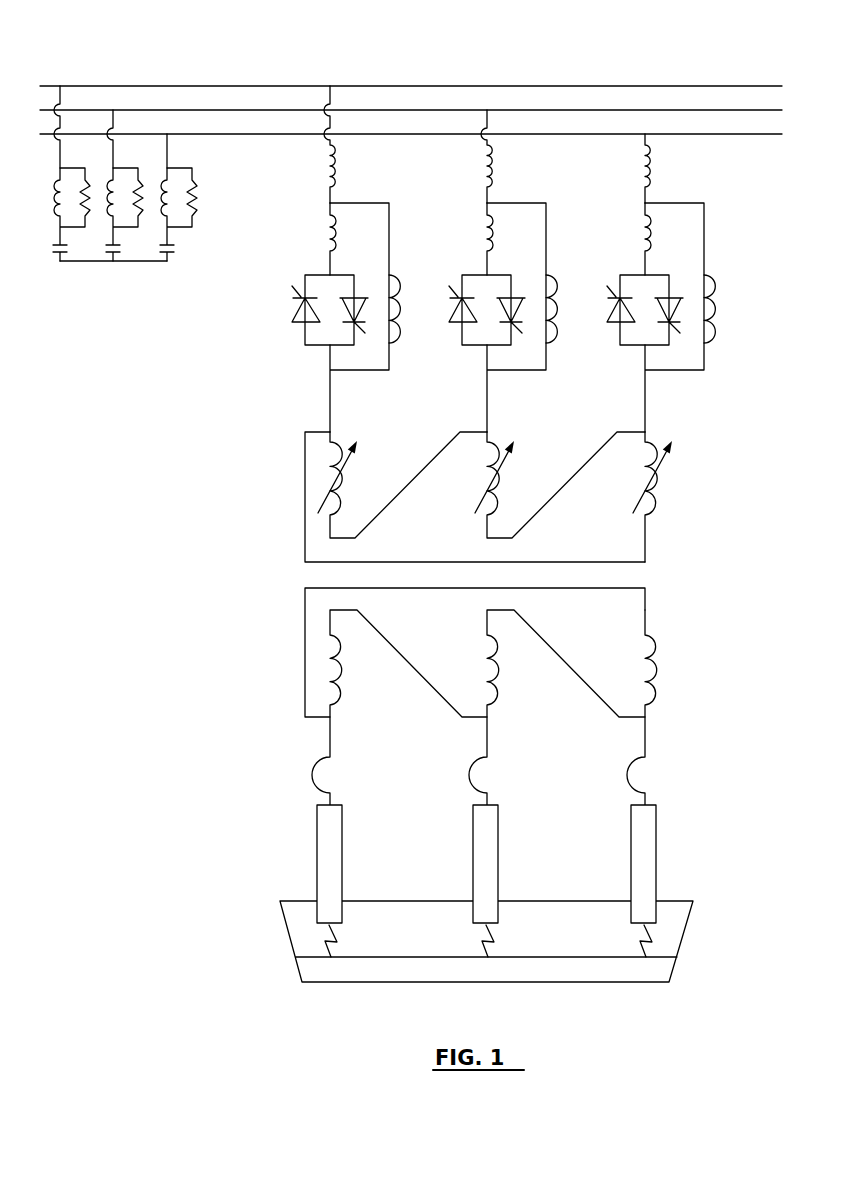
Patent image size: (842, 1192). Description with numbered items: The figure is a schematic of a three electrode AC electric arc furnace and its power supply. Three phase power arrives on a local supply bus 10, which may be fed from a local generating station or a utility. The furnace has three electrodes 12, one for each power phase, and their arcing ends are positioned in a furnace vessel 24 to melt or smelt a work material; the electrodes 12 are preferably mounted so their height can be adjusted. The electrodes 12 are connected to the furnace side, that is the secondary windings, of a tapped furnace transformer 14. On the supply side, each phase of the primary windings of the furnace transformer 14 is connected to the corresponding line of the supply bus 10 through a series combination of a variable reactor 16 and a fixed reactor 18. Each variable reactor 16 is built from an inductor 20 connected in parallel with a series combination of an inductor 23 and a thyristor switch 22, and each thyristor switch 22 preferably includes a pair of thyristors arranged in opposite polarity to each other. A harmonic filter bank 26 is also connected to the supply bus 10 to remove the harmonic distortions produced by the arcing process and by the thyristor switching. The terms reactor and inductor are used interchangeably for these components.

The supply bus 10 is at (712, 72).
The electrodes 12 is at (316, 852).
The furnace transformer 14 is at (684, 430).
The variable reactor 16 is at (350, 380).
The fixed reactor 18 is at (335, 165).
The inductor 20 is at (395, 347).
The thyristor switch 22 is at (313, 273).
The inductor 23 is at (333, 230).
The furnace vessel 24 is at (683, 935).
The harmonic filter bank 26 is at (122, 272).